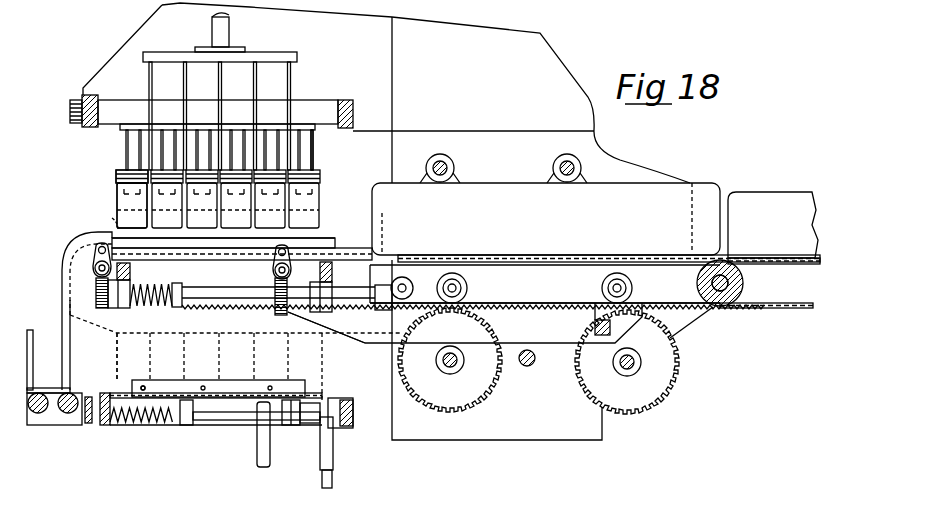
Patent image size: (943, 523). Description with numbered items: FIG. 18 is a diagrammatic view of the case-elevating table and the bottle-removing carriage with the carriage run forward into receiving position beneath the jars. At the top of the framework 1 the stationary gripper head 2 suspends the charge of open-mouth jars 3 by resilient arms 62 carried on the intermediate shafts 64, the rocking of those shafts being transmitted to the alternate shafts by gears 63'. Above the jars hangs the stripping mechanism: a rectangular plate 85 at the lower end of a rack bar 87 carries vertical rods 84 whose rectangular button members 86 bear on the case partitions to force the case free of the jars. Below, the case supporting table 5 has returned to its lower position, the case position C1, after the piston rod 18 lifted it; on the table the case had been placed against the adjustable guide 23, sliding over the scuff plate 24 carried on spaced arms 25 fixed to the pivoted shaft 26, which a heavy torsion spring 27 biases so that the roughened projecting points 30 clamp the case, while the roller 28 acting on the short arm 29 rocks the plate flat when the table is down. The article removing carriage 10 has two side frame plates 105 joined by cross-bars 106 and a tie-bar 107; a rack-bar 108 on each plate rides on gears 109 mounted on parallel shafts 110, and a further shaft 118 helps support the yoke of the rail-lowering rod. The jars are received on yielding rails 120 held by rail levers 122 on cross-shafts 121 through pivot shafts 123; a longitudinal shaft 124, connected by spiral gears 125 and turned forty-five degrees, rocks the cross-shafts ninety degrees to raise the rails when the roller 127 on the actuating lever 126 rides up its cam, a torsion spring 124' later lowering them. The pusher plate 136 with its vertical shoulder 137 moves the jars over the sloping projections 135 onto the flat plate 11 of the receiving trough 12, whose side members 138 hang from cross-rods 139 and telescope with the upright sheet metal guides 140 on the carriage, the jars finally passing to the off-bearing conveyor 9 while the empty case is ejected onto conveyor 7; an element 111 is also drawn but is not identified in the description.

The framework 1 is at (554, 60).
The gripper head 2 is at (119, 150).
The jars 3 is at (115, 197).
The case supporting table 5 is at (100, 426).
The off-bearing conveyor 7 is at (50, 426).
The off-bearing conveyor for the jars 9 is at (778, 256).
The article removing carriage 10 is at (348, 327).
The flat plate 11 is at (597, 254).
The article receiving trough 12 is at (641, 178).
The piston rod 18 is at (257, 447).
The adjustable guide 23 is at (325, 372).
The scuff plate 24 is at (195, 381).
The spaced arms 25 is at (185, 426).
The pivoted shaft 26 is at (215, 421).
The torsion spring 27 is at (130, 426).
The roller 28 is at (334, 436).
The short arm 29 is at (352, 401).
The projecting points 30 is at (143, 386).
The resilient arms 62 is at (314, 158).
The gears 63' is at (74, 102).
The intermediate shafts 64 is at (362, 107).
The vertical rods 84 is at (149, 75).
The rectangular plate 85 is at (297, 58).
The button members 86 is at (116, 191).
The rack bar 87 is at (230, 29).
The side frame plates 105 is at (571, 343).
The cross-bars 106 is at (131, 271).
The tie-bar 107 is at (595, 303).
The rack-bar 108 is at (535, 301).
The gears 109 is at (456, 413).
The parallel shafts 110 is at (449, 368).
The roller 111 is at (466, 286).
The shaft 118 is at (528, 367).
The rails 120 is at (314, 240).
The cross-shafts 121 is at (95, 268).
The rail levers 122 is at (95, 252).
The shafts 123 is at (100, 246).
The longitudinal shaft 124 is at (278, 306).
The torsion spring 124' is at (173, 285).
The spiral gears 125 is at (96, 301).
The actuating lever 126 is at (406, 318).
The roller 127 is at (411, 283).
The sloping projections 135 is at (383, 252).
The pusher plate 136 is at (80, 246).
The vertical shoulder 137 is at (116, 220).
The side members 138 is at (707, 188).
The cross-rods 139 is at (552, 170).
The upright sheet metal guides 140 is at (327, 213).
The case position C1 is at (115, 356).